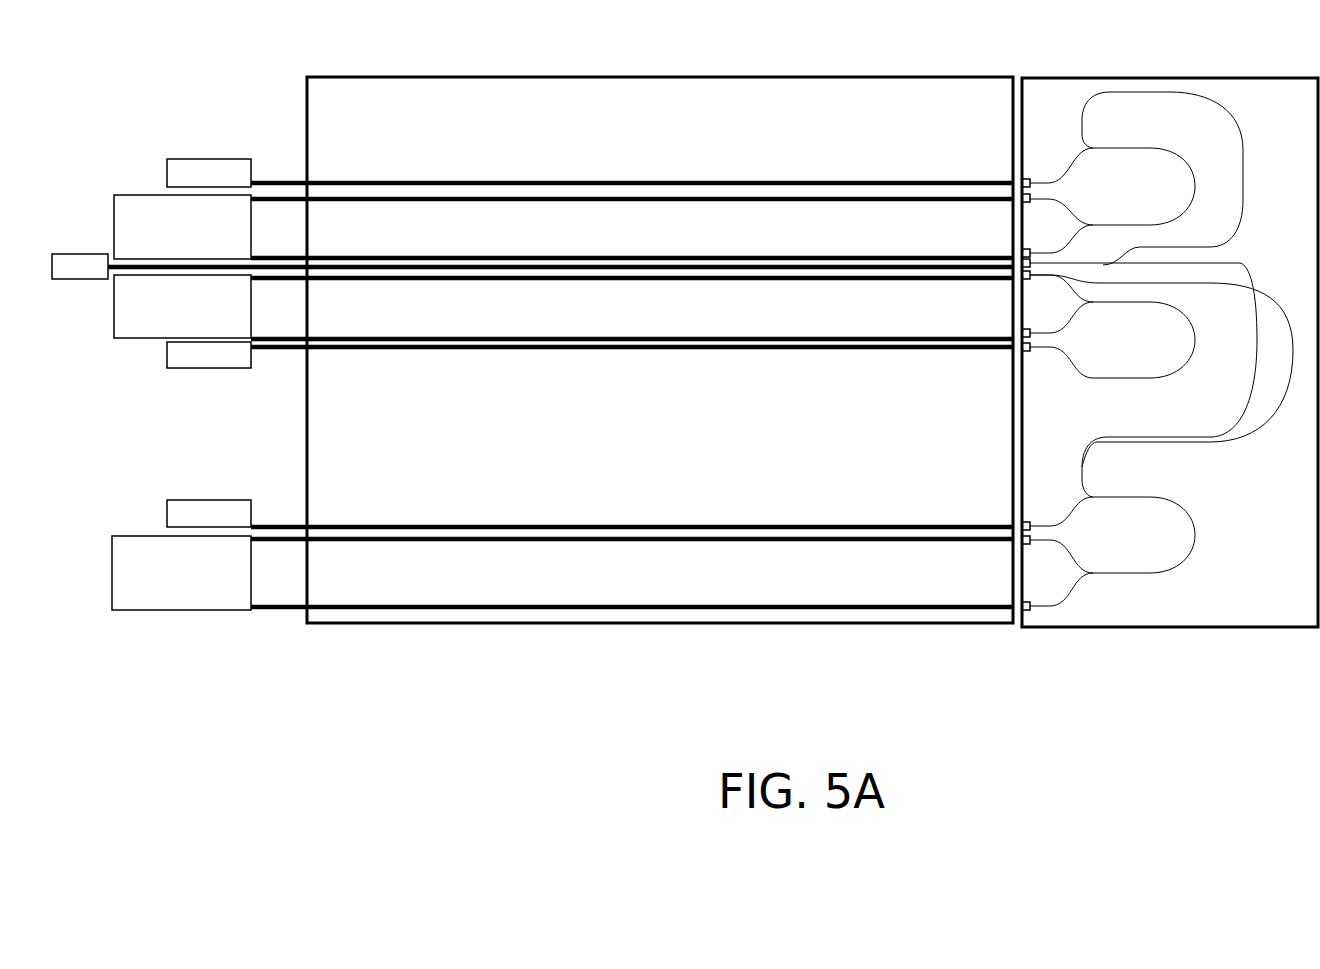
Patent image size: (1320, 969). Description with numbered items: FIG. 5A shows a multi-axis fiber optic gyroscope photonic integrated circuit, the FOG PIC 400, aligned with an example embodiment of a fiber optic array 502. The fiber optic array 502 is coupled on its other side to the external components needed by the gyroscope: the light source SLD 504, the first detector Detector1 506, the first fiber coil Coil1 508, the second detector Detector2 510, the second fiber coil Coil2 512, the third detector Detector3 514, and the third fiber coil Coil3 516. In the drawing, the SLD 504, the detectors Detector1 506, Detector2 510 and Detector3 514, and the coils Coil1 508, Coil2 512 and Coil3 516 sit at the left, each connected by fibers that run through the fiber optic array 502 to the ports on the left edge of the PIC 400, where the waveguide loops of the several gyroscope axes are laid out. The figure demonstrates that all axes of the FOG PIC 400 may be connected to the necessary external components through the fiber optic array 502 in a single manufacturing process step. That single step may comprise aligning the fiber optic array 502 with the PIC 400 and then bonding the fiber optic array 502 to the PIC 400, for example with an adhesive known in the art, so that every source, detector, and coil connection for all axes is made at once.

The FOG PIC 400 is at (1055, 78).
The fiber optic array 502 is at (307, 107).
The SLD 504 is at (67, 257).
The Detector1 506 is at (178, 163).
The Coil1 508 is at (143, 198).
The Detector2 510 is at (178, 363).
The Coil2 512 is at (128, 332).
The Detector3 514 is at (218, 505).
The Coil3 516 is at (128, 542).